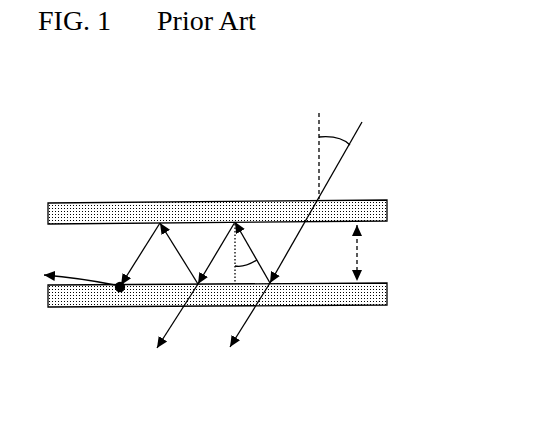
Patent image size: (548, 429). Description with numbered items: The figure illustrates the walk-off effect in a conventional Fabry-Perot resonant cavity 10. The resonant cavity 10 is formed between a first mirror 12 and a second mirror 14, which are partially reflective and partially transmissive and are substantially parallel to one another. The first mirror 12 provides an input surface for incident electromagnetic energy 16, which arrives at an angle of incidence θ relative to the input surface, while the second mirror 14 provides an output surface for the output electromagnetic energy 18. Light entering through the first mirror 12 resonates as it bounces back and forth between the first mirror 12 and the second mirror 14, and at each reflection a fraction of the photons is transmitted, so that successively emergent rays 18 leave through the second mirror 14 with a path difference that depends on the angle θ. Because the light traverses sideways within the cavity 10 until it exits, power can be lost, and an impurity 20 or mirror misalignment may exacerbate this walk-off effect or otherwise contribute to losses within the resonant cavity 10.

The Fabry-Perot resonant cavity 10 is at (266, 128).
The first mirror 12 is at (388, 224).
The second mirror 14 is at (388, 283).
The incident electromagnetic energy 16 is at (347, 164).
The output electromagnetic energy 18 is at (242, 338).
The impurity 20 is at (119, 291).